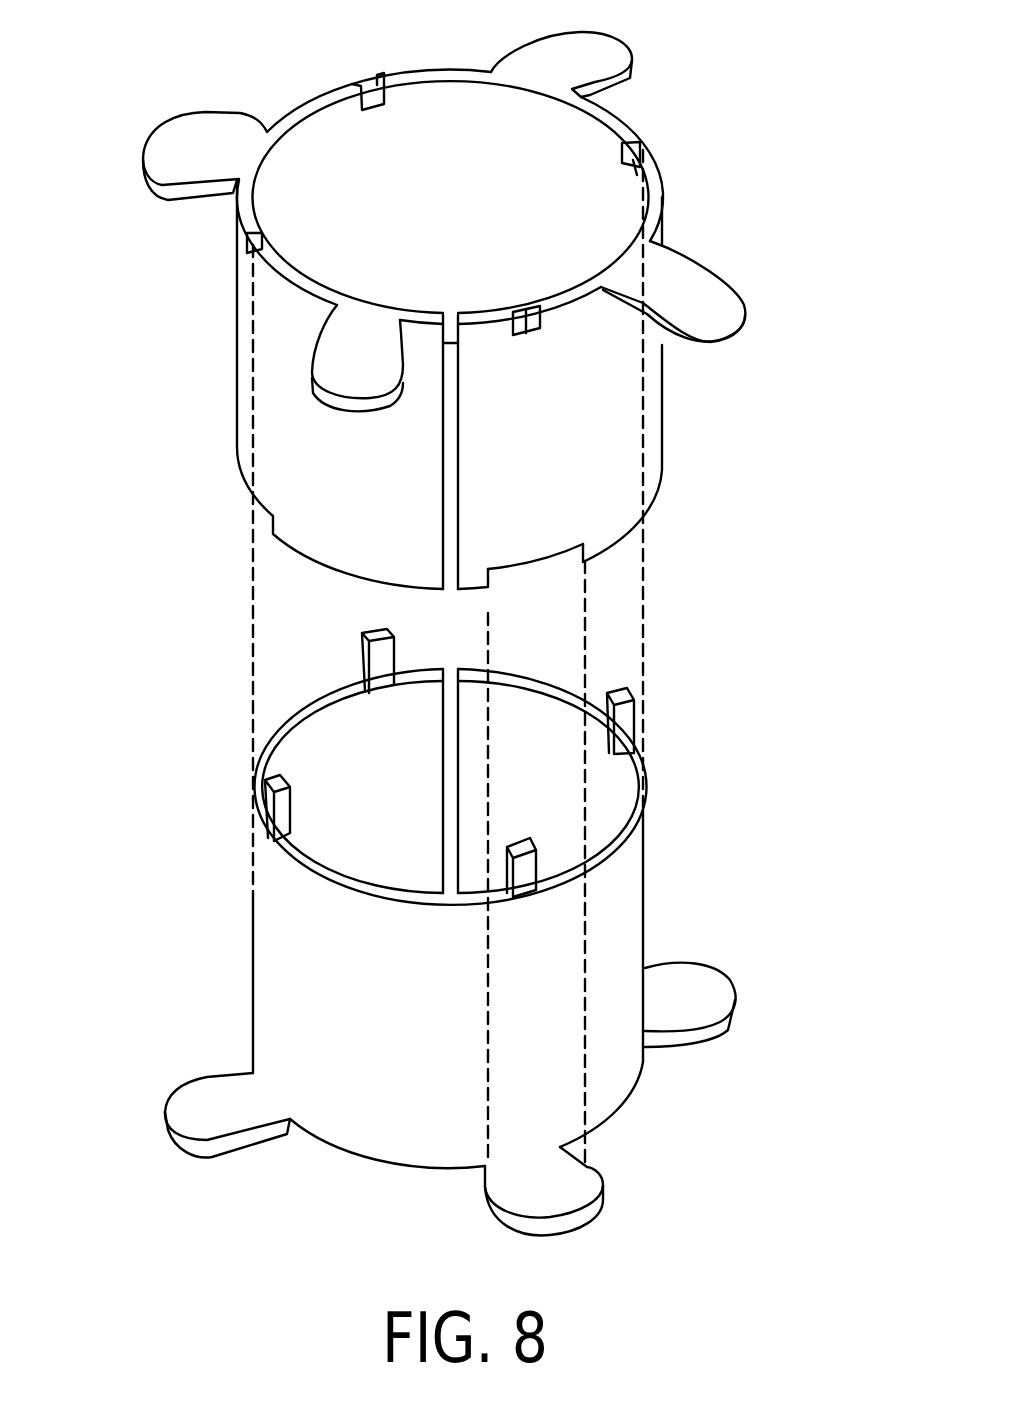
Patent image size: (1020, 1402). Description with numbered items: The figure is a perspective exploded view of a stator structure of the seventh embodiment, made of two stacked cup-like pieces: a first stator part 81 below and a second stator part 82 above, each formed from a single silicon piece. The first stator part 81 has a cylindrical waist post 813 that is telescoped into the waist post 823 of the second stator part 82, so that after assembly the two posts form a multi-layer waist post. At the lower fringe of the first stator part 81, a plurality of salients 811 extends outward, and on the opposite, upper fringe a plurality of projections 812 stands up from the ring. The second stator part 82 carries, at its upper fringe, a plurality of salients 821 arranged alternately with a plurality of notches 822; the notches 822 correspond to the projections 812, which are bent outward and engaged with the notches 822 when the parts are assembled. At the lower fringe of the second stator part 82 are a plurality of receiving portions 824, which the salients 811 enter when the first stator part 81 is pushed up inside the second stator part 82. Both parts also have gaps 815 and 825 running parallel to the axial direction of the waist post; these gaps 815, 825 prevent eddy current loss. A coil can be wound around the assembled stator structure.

The first stator part 81 is at (438, 924).
The salients 811 is at (577, 1183).
The projections 812 is at (625, 727).
The waist post 813 is at (267, 960).
The gap 815 is at (450, 787).
The second stator part 82 is at (453, 331).
The salients 821 is at (667, 273).
The notches 822 is at (640, 145).
The waist post 823 is at (273, 417).
The receiving portions 824 is at (537, 570).
The gap 825 is at (452, 318).